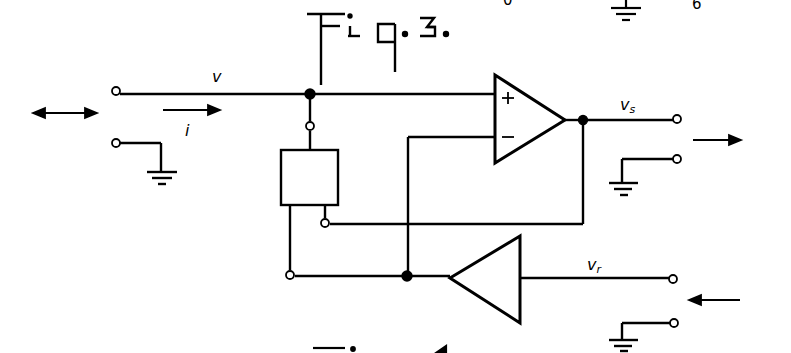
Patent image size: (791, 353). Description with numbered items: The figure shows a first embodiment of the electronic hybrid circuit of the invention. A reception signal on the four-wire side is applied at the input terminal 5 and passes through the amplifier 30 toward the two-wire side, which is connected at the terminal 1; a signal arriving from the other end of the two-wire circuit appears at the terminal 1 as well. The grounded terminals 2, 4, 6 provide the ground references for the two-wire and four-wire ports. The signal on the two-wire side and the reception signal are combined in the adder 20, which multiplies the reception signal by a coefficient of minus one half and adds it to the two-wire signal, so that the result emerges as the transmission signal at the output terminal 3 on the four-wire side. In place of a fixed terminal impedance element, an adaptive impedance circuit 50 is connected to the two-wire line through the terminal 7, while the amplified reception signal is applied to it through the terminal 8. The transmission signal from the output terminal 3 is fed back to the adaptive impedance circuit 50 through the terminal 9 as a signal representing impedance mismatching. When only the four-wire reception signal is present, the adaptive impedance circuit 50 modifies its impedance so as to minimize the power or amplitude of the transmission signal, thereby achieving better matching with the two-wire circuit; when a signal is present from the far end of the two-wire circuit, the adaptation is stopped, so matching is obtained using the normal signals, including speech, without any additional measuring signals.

The terminal 1 is at (119, 87).
The grounded terminal 2 is at (114, 147).
The output terminal 3 is at (680, 115).
The grounded terminal 4 is at (677, 163).
The input terminal 5 is at (676, 275).
The grounded terminal 6 is at (675, 327).
The terminal 7 is at (315, 125).
The terminal 8 is at (287, 279).
The terminal 9 is at (324, 227).
The adder 20 is at (545, 97).
The amplifier 30 is at (493, 302).
The adaptive impedance circuit 50 is at (340, 170).